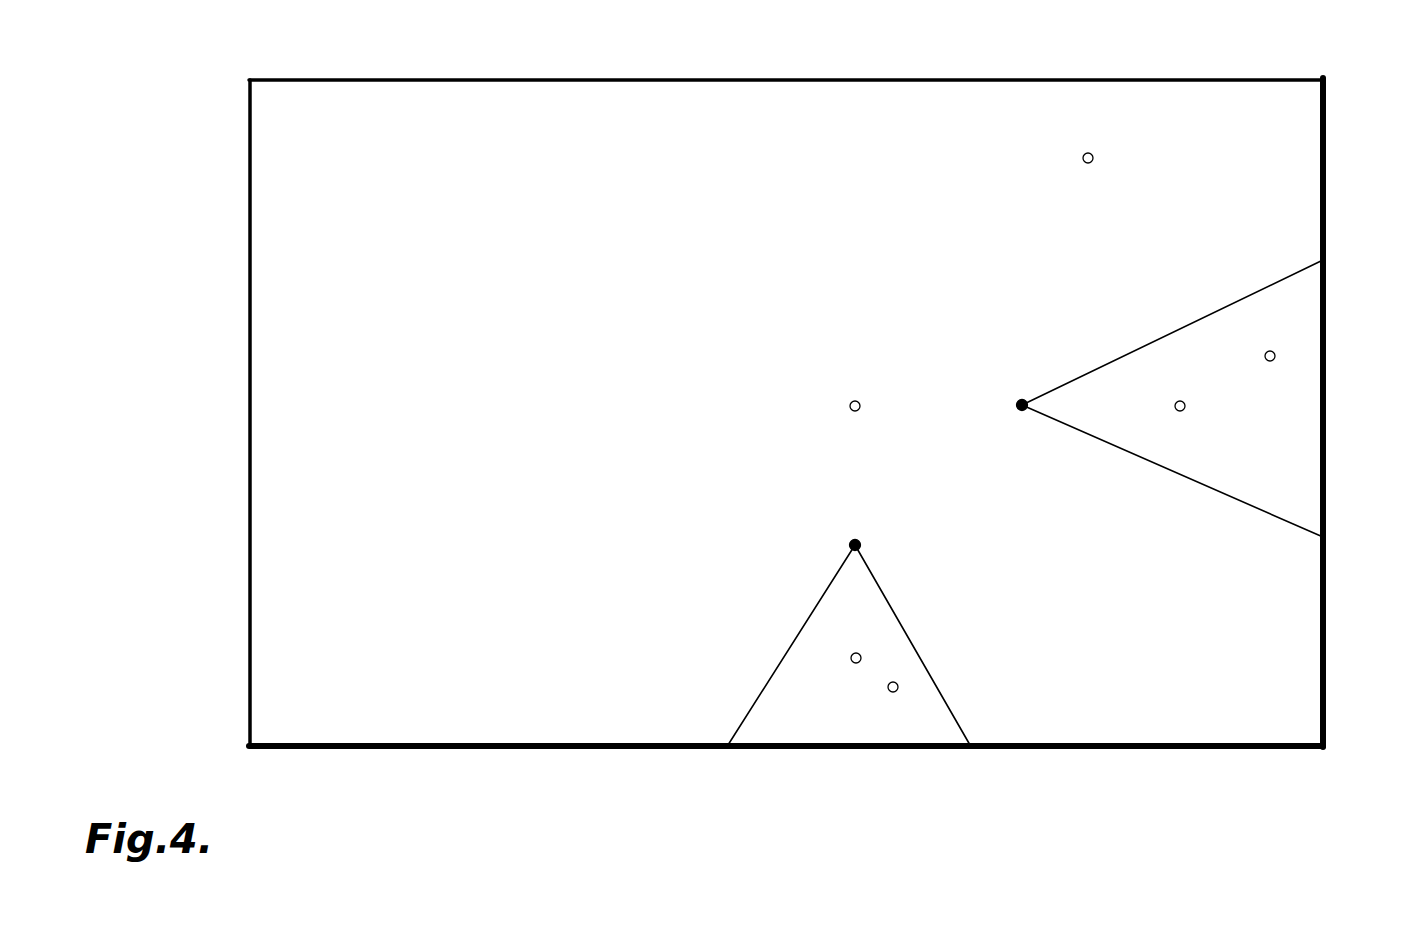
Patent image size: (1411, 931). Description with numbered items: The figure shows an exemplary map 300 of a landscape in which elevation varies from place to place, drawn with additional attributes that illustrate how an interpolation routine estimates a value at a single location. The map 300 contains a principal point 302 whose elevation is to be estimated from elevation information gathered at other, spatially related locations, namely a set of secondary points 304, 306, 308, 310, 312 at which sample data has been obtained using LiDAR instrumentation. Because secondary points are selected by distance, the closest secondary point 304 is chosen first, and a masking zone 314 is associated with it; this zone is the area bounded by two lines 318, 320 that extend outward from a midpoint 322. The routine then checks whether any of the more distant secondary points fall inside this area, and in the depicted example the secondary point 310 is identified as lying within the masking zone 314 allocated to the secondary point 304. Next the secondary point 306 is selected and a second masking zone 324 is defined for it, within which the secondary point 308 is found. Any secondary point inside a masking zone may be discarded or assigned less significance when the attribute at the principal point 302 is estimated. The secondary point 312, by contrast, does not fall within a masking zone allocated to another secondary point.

The map 300 is at (169, 94).
The principal point 302 is at (851, 410).
The secondary point 304 is at (1186, 406).
The secondary point 306 is at (856, 664).
The secondary point 308 is at (893, 692).
The secondary point 310 is at (1275, 353).
The secondary point 312 is at (1092, 153).
The masking zone 314 is at (1285, 488).
The line 318 is at (1287, 277).
The line 320 is at (1302, 530).
The midpoint 322 is at (1022, 411).
The masking zone 324 is at (772, 715).